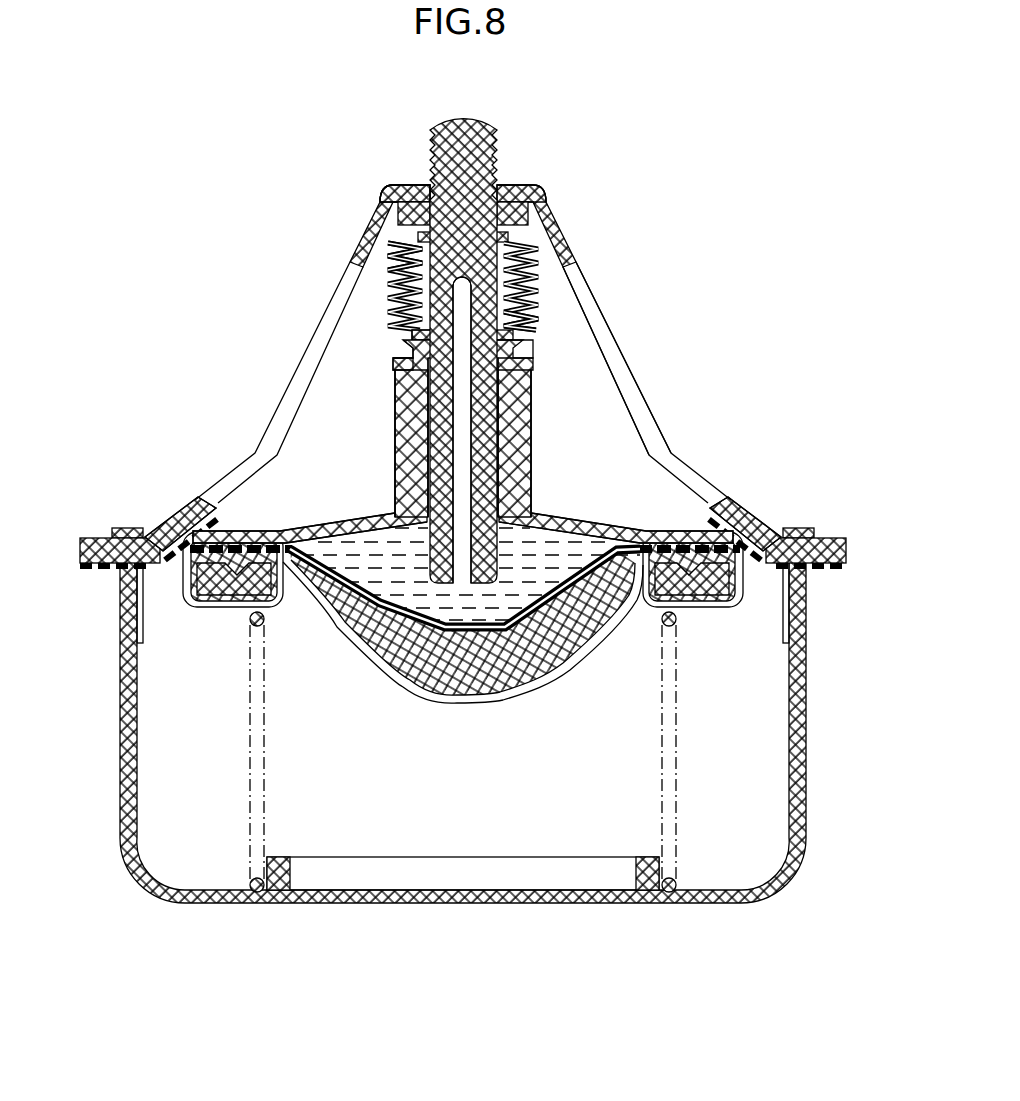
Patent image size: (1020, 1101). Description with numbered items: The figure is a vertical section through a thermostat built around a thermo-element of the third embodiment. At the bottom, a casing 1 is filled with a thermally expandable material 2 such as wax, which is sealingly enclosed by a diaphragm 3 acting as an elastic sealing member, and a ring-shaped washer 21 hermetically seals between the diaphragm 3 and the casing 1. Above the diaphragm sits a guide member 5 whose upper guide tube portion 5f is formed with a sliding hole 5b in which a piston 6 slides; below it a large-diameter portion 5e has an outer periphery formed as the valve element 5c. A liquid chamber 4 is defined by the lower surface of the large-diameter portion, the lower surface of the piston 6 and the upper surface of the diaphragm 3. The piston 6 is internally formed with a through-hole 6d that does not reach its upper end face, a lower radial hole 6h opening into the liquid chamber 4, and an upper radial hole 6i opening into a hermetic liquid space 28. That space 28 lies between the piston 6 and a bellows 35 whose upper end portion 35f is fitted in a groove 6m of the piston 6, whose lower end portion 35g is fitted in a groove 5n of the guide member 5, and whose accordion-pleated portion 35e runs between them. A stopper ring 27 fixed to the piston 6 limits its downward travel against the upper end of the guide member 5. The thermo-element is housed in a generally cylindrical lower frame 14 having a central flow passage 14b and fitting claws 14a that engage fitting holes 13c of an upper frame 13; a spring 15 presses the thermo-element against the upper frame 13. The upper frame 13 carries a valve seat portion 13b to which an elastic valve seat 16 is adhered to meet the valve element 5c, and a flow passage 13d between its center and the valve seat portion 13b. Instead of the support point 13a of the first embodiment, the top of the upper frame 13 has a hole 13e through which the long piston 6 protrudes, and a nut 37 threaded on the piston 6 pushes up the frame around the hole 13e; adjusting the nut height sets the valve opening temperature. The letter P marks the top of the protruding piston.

The casing 1 is at (457, 703).
The thermally expandable material 2 is at (505, 672).
The diaphragm 3 is at (690, 490).
The liquid chamber 4 is at (540, 463).
The guide member 5 is at (534, 425).
The sliding hole 5b is at (534, 395).
The valve element 5c is at (742, 566).
The large-diameter portion 5e is at (560, 528).
The guide tube portion 5f is at (532, 368).
The groove 5n is at (396, 346).
The piston 6 is at (432, 428).
The through-hole 6d is at (472, 372).
The radial hole 6h is at (425, 520).
The radial hole 6i is at (392, 270).
The groove 6m is at (502, 199).
The upper frame 13 is at (540, 186).
The support point 13a is at (180, 524).
The valve seat portion 13b is at (765, 537).
The fitting holes 13c is at (820, 548).
The flow passage 13d is at (578, 287).
The hole 13e is at (430, 178).
The lower frame 14 is at (808, 700).
The fitting claws 14a is at (803, 530).
The flow passage 14b is at (432, 877).
The spring 15 is at (250, 720).
The valve seat 16 is at (735, 533).
The washer 21 is at (745, 606).
The stopper ring 27 is at (397, 333).
The hermetic liquid space 28 is at (515, 332).
The bellows 35 is at (545, 248).
The accordion-pleated portion 35e is at (535, 305).
The upper end portion 35f is at (423, 236).
The lower end portion 35g is at (395, 362).
The nut 37 is at (507, 210).
The threaded rod P is at (493, 135).